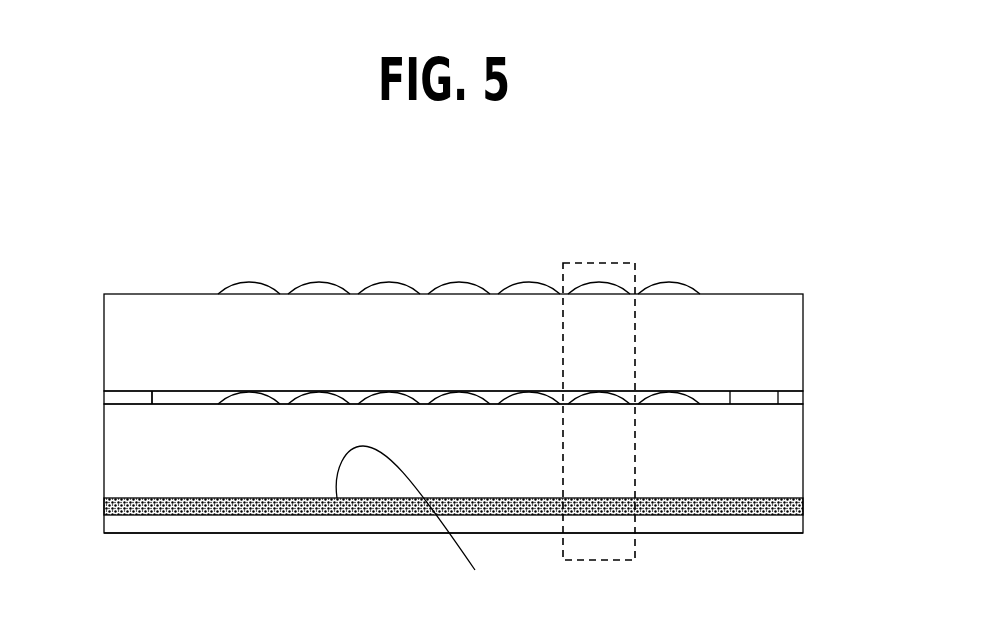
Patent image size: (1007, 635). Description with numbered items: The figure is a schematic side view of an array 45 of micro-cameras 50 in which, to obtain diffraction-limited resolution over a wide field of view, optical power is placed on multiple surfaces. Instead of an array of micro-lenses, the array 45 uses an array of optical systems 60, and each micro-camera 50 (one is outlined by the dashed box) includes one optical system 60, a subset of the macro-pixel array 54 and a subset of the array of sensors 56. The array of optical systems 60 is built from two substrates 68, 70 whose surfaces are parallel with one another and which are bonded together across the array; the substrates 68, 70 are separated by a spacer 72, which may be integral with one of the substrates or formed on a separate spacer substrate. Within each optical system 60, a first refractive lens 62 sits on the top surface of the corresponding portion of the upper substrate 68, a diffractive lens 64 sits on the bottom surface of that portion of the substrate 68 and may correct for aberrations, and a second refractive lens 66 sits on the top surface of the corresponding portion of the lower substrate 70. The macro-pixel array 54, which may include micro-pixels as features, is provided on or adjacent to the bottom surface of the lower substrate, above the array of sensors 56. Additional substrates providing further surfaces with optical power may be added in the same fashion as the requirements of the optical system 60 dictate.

The array of micro-cameras 45 is at (411, 170).
The micro-camera 50 is at (608, 263).
The macro-pixel array 54 is at (422, 522).
The array of sensors 56 is at (276, 536).
The optical system 60 is at (815, 295).
The first refractive lens 62 is at (241, 282).
The diffractive lens 64 is at (518, 390).
The second refractive lens 66 is at (228, 398).
The substrate 68 is at (104, 346).
The substrate 70 is at (104, 441).
The spacer 72 is at (104, 392).